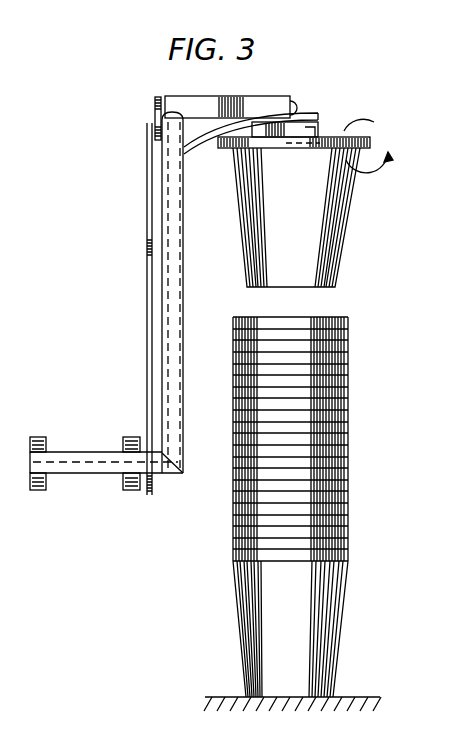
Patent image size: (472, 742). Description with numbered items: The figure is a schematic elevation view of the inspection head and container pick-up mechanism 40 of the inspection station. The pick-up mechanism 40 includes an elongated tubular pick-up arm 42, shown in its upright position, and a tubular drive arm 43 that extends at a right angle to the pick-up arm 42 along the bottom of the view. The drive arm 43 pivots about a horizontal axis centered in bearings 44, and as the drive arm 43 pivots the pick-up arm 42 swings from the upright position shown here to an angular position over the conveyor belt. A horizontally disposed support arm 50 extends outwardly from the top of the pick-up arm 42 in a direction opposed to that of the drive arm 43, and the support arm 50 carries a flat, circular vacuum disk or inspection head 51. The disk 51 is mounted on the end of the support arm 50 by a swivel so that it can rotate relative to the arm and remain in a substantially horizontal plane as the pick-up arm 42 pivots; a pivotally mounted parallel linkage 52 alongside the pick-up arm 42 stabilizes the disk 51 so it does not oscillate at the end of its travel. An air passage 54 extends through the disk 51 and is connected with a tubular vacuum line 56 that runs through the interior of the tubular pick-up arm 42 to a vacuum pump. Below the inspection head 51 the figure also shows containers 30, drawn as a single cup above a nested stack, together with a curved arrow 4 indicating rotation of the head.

The direction of rotation arrow 4 is at (368, 146).
The cup 30 is at (340, 262).
The container pick-up mechanism 40 is at (157, 292).
The pick-up arm 42 is at (184, 298).
The drive arm 43 is at (78, 474).
The bearings 44 is at (38, 437).
The support arm 50 is at (270, 83).
The vacuum disk or inspection head 51 is at (248, 150).
The parallel linkage 52 is at (147, 308).
The air passage 54 is at (315, 128).
The vacuum line 56 is at (190, 147).